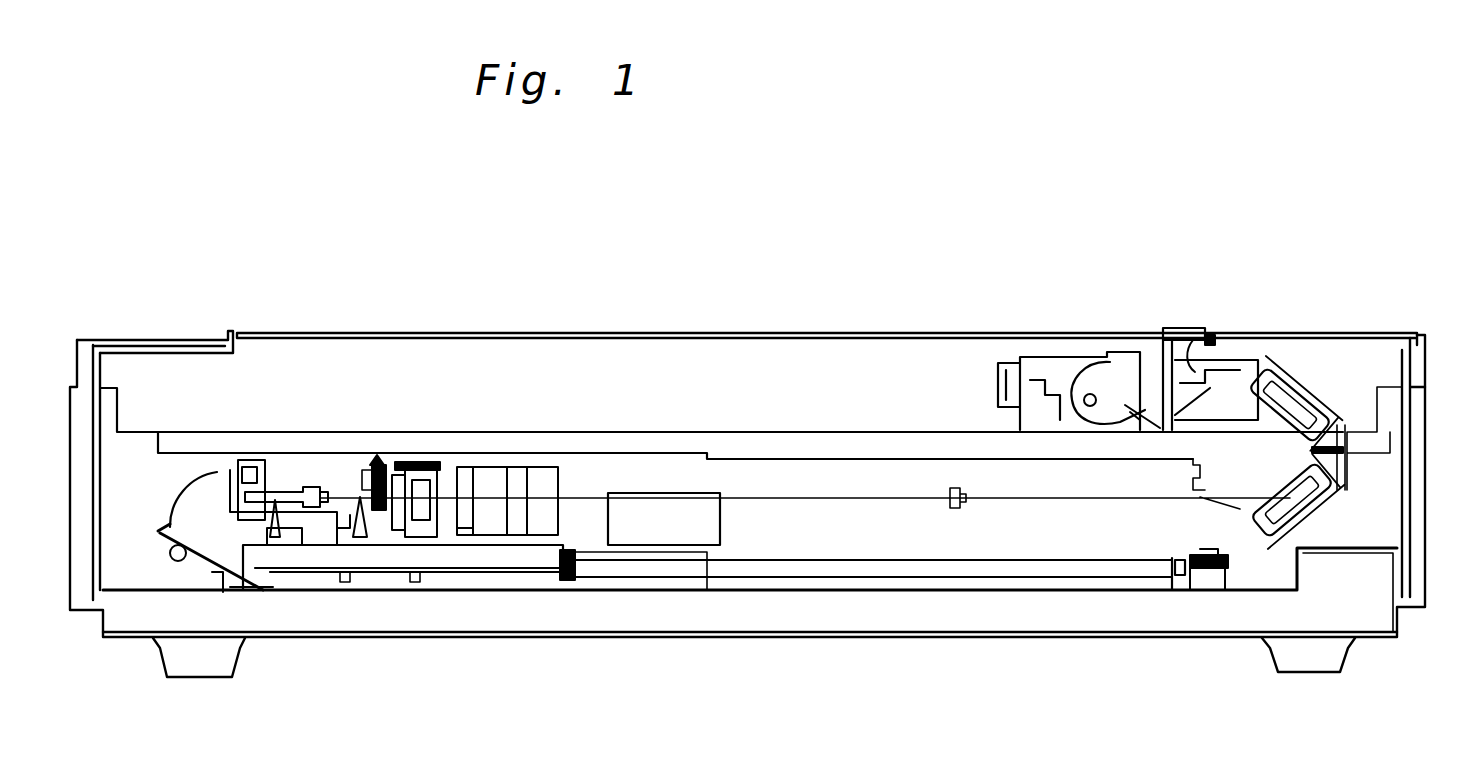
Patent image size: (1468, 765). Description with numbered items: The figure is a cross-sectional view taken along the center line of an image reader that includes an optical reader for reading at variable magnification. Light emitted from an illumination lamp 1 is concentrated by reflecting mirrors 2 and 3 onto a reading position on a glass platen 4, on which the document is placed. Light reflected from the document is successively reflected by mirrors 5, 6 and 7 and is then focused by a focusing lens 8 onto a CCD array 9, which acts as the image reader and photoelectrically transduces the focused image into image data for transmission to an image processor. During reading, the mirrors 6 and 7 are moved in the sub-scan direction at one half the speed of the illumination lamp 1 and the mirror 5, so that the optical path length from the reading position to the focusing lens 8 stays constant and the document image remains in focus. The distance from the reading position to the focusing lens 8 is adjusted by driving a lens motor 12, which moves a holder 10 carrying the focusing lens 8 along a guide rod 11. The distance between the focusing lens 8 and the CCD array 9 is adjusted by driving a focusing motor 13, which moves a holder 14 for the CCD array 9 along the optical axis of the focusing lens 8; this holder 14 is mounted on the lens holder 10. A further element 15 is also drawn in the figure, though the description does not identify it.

The illumination lamp 1 is at (1090, 398).
The reflecting mirror 2 is at (1076, 387).
The reflecting mirror 3 is at (1207, 337).
The glass platen 4 is at (922, 337).
The mirror 5 is at (1155, 340).
The mirror 6 is at (1277, 387).
The mirror 7 is at (1290, 490).
The focusing lens 8 is at (543, 480).
The CCD array 9 is at (432, 463).
The holder 10 is at (532, 555).
The guide rod 11 is at (653, 567).
The lens motor 12 is at (705, 523).
The focusing motor 13 is at (213, 473).
The holder 14 is at (383, 463).
The clamp spring 15 is at (1178, 330).